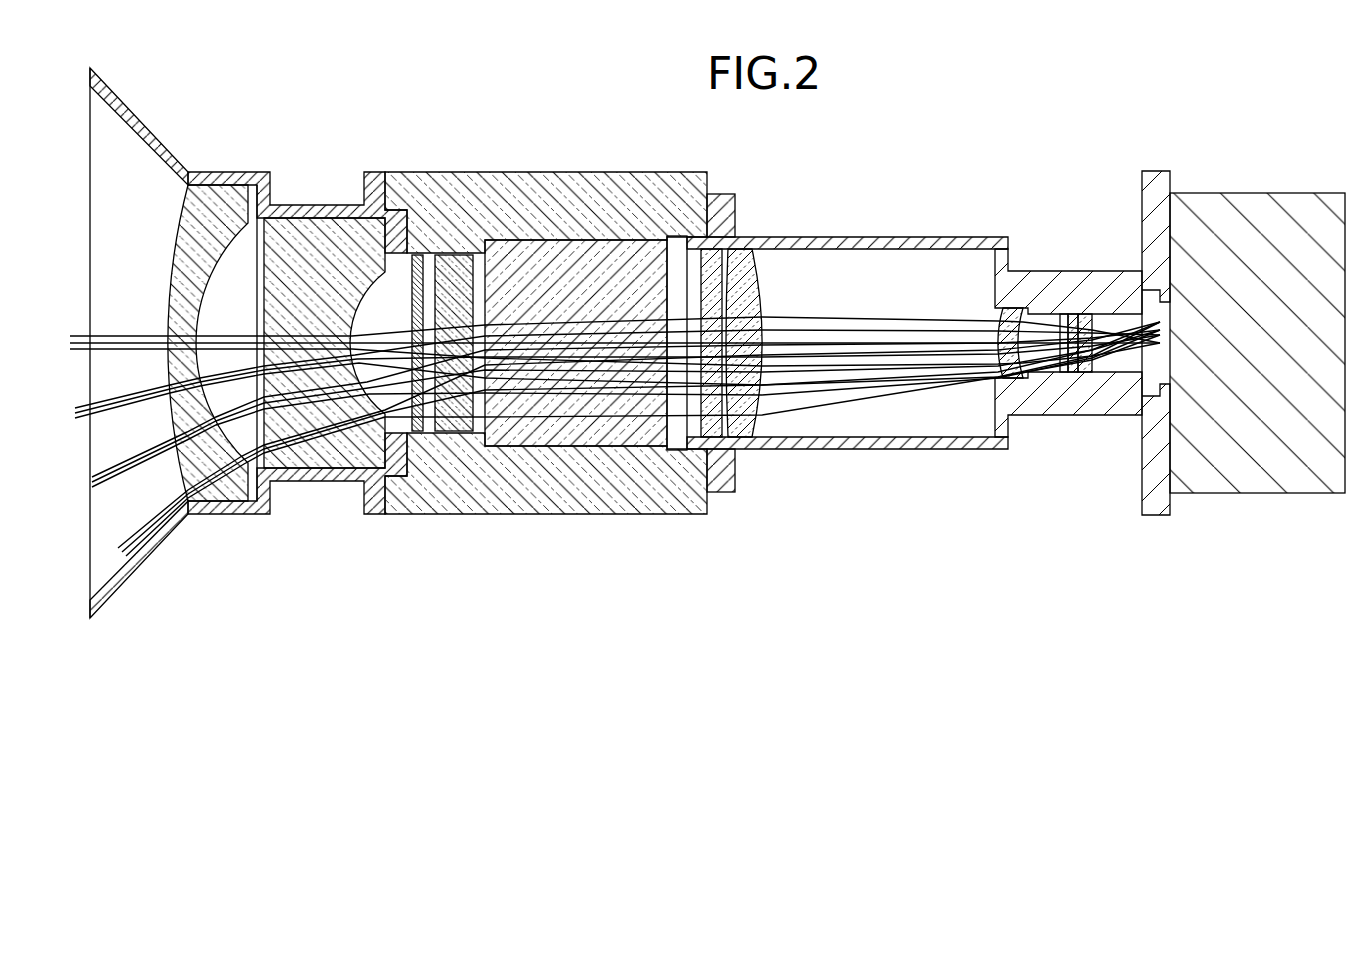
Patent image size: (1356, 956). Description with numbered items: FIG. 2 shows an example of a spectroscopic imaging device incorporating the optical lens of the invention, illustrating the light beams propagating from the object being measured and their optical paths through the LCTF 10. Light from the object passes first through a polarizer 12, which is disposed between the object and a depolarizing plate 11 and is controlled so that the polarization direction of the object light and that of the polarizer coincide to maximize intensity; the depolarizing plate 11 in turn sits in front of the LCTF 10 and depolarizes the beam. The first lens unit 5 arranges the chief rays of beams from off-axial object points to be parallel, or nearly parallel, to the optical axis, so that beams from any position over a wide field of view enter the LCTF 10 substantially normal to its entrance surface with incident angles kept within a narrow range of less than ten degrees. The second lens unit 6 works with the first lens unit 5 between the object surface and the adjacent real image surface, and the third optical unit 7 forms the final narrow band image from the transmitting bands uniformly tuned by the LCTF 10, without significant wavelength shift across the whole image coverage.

The first lens unit 5 is at (165, 135).
The second lens unit 6 is at (768, 271).
The third optical unit 7 is at (987, 228).
The LCTF 10 is at (568, 232).
The depolarizing plate 11 is at (458, 247).
The polarizer 12 is at (420, 246).